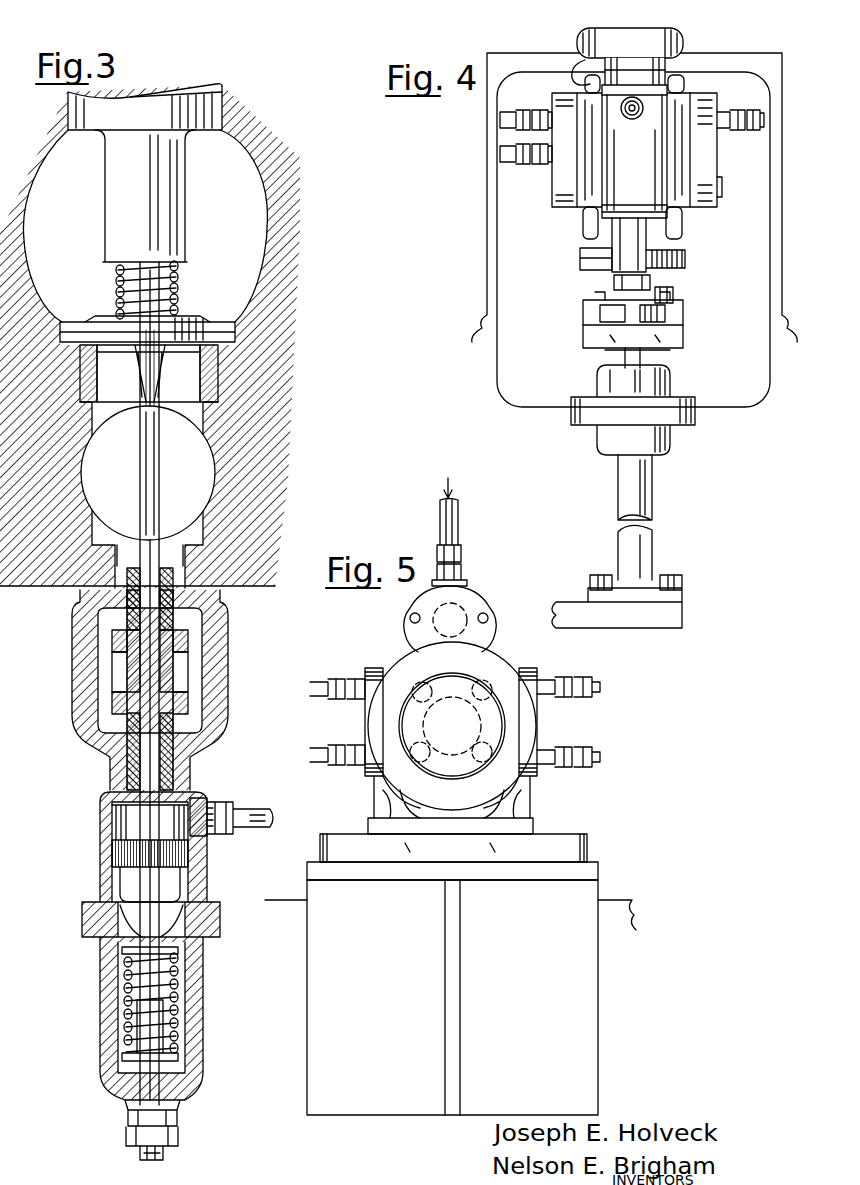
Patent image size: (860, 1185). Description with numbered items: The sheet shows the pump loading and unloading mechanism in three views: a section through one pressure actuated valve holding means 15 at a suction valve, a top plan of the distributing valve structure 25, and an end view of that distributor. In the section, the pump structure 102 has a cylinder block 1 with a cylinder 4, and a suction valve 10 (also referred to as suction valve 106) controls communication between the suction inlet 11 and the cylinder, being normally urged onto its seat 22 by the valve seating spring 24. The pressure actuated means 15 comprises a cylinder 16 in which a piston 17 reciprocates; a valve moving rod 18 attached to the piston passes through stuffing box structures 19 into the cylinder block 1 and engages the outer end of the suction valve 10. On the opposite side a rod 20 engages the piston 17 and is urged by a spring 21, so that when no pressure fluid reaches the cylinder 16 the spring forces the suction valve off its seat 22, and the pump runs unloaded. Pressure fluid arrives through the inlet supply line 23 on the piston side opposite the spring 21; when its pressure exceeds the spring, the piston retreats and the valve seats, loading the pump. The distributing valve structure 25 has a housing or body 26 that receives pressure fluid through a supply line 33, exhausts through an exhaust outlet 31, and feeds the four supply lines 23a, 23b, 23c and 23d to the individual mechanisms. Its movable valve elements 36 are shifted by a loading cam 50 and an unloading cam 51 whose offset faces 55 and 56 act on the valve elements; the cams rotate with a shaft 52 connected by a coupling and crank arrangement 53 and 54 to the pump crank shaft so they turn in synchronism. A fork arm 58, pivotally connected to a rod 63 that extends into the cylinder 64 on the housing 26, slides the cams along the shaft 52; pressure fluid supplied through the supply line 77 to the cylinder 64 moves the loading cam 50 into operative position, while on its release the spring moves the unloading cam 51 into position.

In FIG. 3, the cylinder block 1 is at (265, 515).
In FIG. 3, the cylinder 4 is at (255, 240).
In FIG. 3, the suction valve 10 is at (180, 330).
In FIG. 3, the suction inlet 11 is at (200, 465).
In FIG. 3, the pressure actuated valve holding means 15 is at (220, 881).
In FIG. 3, the cylinder 16 is at (112, 828).
In FIG. 3, the piston 17 is at (125, 858).
In FIG. 3, the valve moving rod 18 is at (150, 672).
In FIG. 3, the stuffing box structures 19 is at (185, 728).
In FIG. 3, the rod 20 is at (185, 912).
In FIG. 3, the spring 21 is at (170, 978).
In FIG. 3, the seat 22 is at (218, 375).
In FIG. 3, the inlet supply line 23 is at (254, 805).
In FIG. 5, the pressure fluid supply line 23a is at (595, 752).
In FIG. 5, the pressure fluid supply line 23b is at (318, 750).
In FIG. 4, the pressure fluid supply line 23c is at (508, 110).
In FIG. 5, the pressure fluid supply line 23c is at (590, 684).
In FIG. 4, the pressure fluid supply line 23d is at (752, 110).
In FIG. 5, the pressure fluid supply line 23d is at (318, 684).
In FIG. 3, the valve seating spring 24 is at (178, 282).
In FIG. 5, the distributing valve structure 25 is at (537, 725).
In FIG. 4, the housing or body 26 is at (690, 163).
In FIG. 5, the housing or body 26 is at (395, 805).
In FIG. 4, the exhaust outlet 31 is at (722, 190).
In FIG. 4, the supply line 33 is at (508, 165).
In FIG. 4, the valve elements 36 is at (705, 230).
In FIG. 5, the valve elements 36 is at (490, 760).
In FIG. 4, the loading cam 50 is at (618, 280).
In FIG. 4, the unloading cam 51 is at (665, 30).
In FIG. 5, the unloading cam 51 is at (462, 770).
In FIG. 4, the shaft 52 is at (642, 355).
In FIG. 4, the coupling 53 is at (665, 452).
In FIG. 4, the crank arrangement 54 is at (670, 614).
In FIG. 4, the valve actuating offset face 55 is at (580, 252).
In FIG. 4, the valve actuating offset face 56 is at (585, 66).
In FIG. 4, the fork arm 58 is at (673, 292).
In FIG. 4, the rod 63 is at (583, 310).
In FIG. 4, the cylinder 64 is at (645, 245).
In FIG. 5, the cylinder 64 is at (455, 615).
In FIG. 4, the supply line 77 is at (628, 120).
In FIG. 5, the supply line 77 is at (458, 522).
In FIG. 3, the pump structure 102 is at (250, 178).
In FIG. 3, the suction valve 106 is at (210, 318).